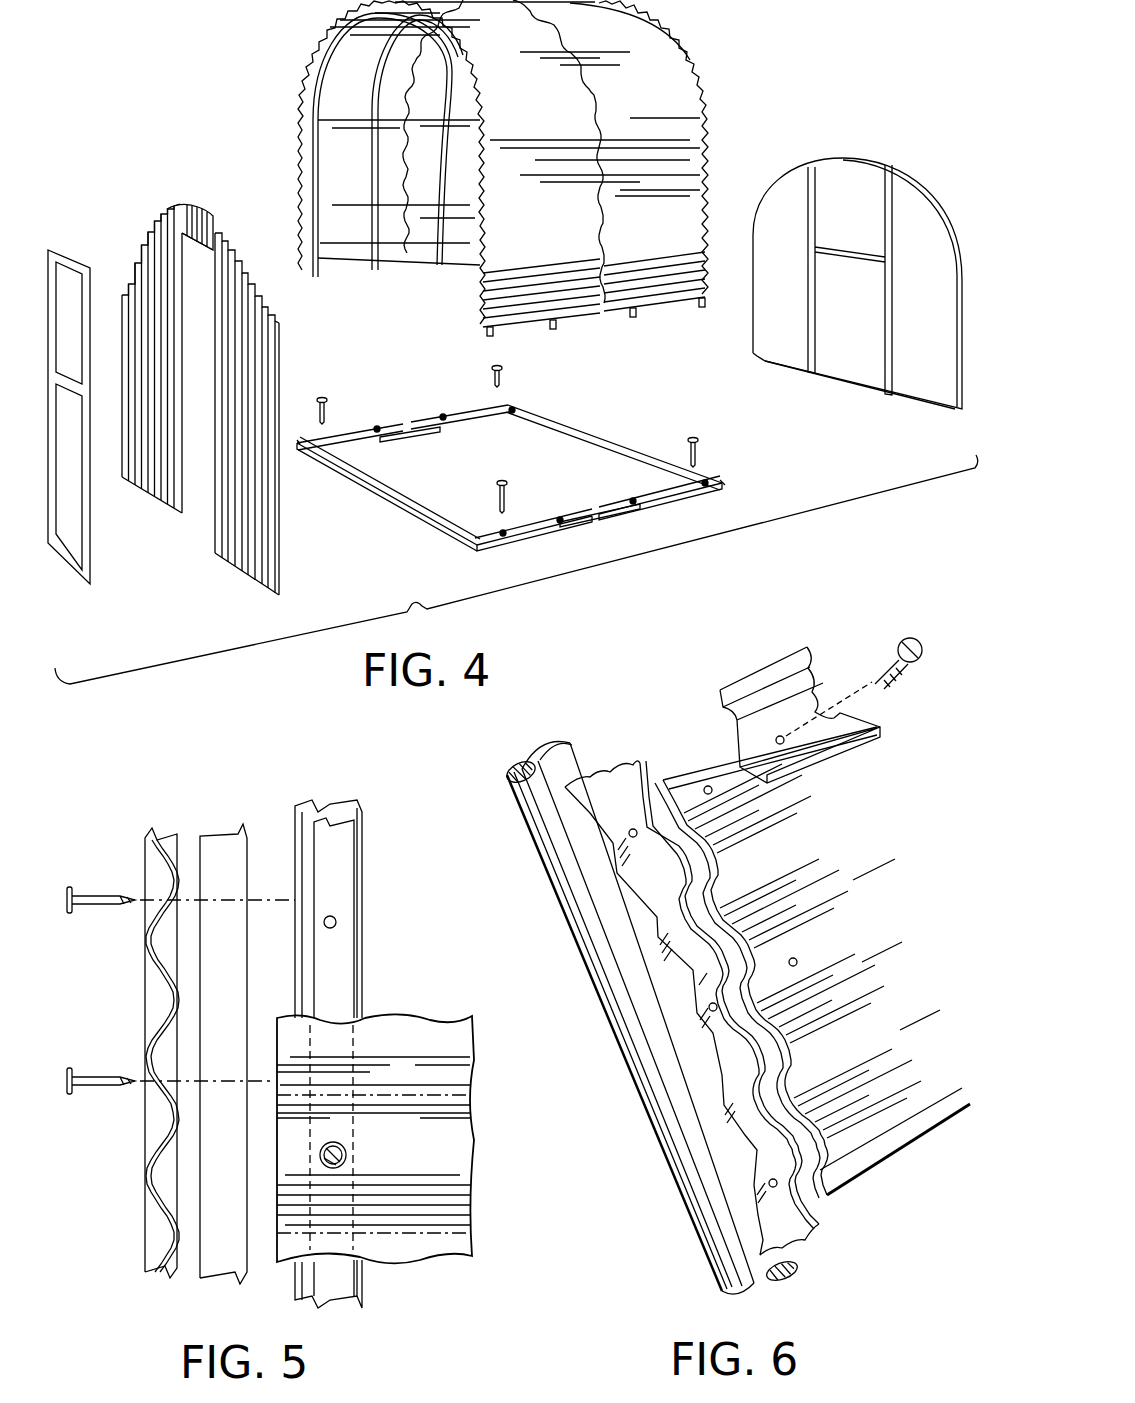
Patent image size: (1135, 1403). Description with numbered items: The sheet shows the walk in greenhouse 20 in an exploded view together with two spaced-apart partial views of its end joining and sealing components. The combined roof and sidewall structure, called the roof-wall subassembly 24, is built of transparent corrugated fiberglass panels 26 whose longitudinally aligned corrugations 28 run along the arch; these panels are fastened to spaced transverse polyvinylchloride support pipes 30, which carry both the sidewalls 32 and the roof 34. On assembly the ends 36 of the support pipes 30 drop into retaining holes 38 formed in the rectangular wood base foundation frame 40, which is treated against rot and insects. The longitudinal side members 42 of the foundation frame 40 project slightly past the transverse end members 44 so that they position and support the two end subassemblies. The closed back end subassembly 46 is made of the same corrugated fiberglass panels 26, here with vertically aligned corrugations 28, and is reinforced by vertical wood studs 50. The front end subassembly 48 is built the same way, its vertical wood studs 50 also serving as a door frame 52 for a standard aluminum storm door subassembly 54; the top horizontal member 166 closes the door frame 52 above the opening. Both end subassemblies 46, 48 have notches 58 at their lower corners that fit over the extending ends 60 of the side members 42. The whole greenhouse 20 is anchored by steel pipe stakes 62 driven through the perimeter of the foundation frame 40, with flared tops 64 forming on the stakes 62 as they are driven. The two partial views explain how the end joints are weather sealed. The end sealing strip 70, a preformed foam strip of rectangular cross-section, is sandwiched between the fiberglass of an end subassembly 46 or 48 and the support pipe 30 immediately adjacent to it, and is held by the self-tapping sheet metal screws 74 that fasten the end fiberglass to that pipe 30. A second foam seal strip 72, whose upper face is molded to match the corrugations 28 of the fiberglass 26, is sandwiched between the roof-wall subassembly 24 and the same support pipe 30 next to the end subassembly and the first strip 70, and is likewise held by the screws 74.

In FIG. 4, the walk in greenhouse 20 is at (308, 47).
In FIG. 4, the roof-wall subassembly 24 is at (708, 108).
In FIG. 4, the transparent corrugated fiberglass panels 26 is at (702, 204).
In FIG. 5, the transparent corrugated fiberglass panels 26 is at (425, 1016).
In FIG. 6, the transparent corrugated fiberglass panels 26 is at (812, 655).
In FIG. 4, the corrugations 28 is at (706, 155).
In FIG. 6, the corrugations 28 is at (640, 830).
In FIG. 4, the plastic support pipes 30 is at (313, 160).
In FIG. 5, the plastic support pipes 30 is at (356, 1054).
In FIG. 6, the plastic support pipes 30 is at (552, 884).
In FIG. 4, the sidewalls 32 is at (692, 240).
In FIG. 4, the roof 34 is at (672, 28).
In FIG. 4, the ends of plastic support pipes 36 is at (318, 276).
In FIG. 4, the retaining holes 38 is at (376, 424).
In FIG. 4, the wood base foundation frame 40 is at (535, 482).
In FIG. 4, the longitudinal side members 42 is at (400, 430).
In FIG. 4, the transverse end members 44 is at (575, 426).
In FIG. 4, the back end subassembly 46 is at (837, 295).
In FIG. 4, the front end subassembly 48 is at (207, 212).
In FIG. 4, the vertical wood studs 50 is at (815, 212).
In FIG. 4, the door frame 52 is at (182, 349).
In FIG. 4, the aluminum storm door subassembly 54 is at (92, 574).
In FIG. 4, the notches 58 is at (755, 356).
In FIG. 4, the extending ends of longitudinal side members 60 is at (722, 483).
In FIG. 4, the steel pipe stakes 62 is at (533, 427).
In FIG. 4, the flared tops 64 is at (712, 437).
In FIG. 5, the end sealing strip 70 is at (242, 835).
In FIG. 5, the plastic foam seal strip 72 is at (358, 960).
In FIG. 6, the plastic foam seal strip 72 is at (618, 760).
In FIG. 5, the self-tapping sheet metal screws 74 is at (76, 888).
In FIG. 6, the self-tapping sheet metal screws 74 is at (909, 638).
In FIG. 4, the top horizontal member of door frame 166 is at (192, 244).